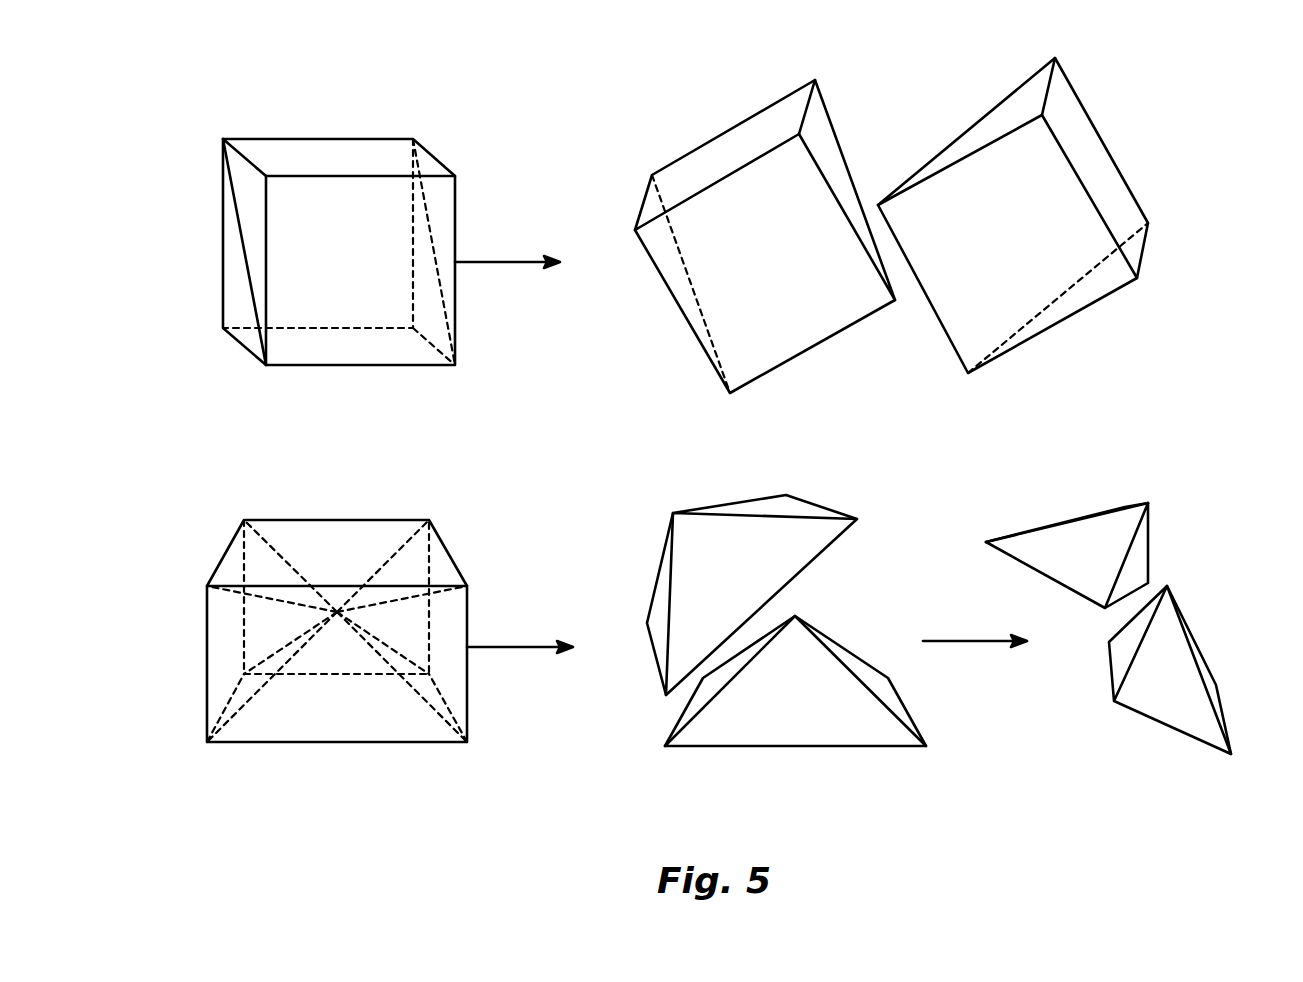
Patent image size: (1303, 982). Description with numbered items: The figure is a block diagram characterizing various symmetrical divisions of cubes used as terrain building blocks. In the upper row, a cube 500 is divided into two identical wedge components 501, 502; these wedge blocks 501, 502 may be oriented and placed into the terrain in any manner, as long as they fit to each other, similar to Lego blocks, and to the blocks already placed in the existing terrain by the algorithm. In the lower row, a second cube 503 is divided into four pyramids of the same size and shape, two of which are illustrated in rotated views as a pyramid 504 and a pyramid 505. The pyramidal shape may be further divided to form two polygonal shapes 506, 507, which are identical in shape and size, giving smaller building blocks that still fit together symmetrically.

The cube 500 is at (223, 240).
The wedge component 501 is at (718, 137).
The wedge component 502 is at (987, 112).
The cube 503 is at (207, 613).
The pyramid 504 is at (654, 593).
The pyramid 505 is at (837, 643).
The polygonal shape 506 is at (1087, 512).
The polygonal shape 507 is at (1205, 657).